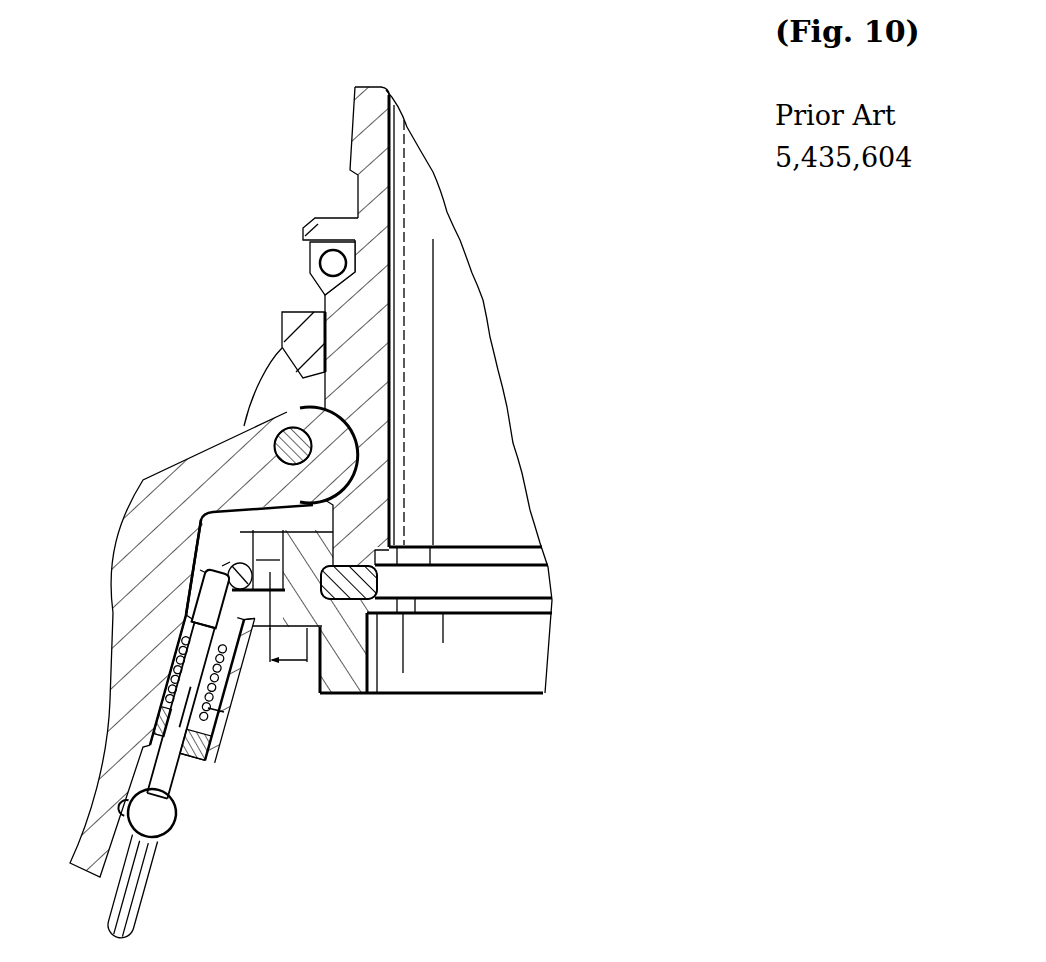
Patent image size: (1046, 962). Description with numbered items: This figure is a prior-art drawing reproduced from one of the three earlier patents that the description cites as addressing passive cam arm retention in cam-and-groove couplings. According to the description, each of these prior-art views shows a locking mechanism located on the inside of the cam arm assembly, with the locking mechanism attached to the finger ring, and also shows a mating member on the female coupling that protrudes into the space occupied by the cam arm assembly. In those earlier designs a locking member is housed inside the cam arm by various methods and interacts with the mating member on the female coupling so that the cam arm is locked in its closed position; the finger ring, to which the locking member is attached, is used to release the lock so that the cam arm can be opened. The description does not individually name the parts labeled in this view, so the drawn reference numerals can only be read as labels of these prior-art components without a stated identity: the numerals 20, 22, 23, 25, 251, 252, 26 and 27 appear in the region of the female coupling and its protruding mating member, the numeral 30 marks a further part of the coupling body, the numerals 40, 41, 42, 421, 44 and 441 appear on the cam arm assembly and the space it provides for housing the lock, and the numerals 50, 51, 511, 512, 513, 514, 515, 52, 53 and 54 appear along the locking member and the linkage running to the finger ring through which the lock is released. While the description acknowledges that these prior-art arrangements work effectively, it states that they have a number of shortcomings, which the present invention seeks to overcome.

The fixed member 20 is at (291, 306).
The wedge block 22 is at (292, 337).
The arc surface 23 is at (267, 383).
The support block 25 is at (285, 530).
The first support portion 251 is at (265, 553).
The cam projection 252 is at (229, 565).
The lower portion 26 is at (310, 632).
The stop surface 27 is at (222, 566).
The bracket 30 is at (323, 212).
The swing arm 40 is at (181, 450).
The pivot pin 41 is at (280, 431).
The housing bore 42 is at (212, 742).
The bore wall 421 is at (217, 727).
The arm opening 44 is at (205, 585).
The opening edge 441 is at (210, 575).
The plunger assembly 50 is at (161, 735).
The plunger shaft 51 is at (175, 747).
The shaft end 511 is at (188, 627).
The ball joint 512 is at (172, 818).
The retaining clip 513 is at (132, 802).
The plunger head 514 is at (200, 595).
The shoulder 515 is at (243, 630).
The compression spring 52 is at (215, 680).
The end cap 53 is at (207, 760).
The connecting rod 54 is at (137, 887).